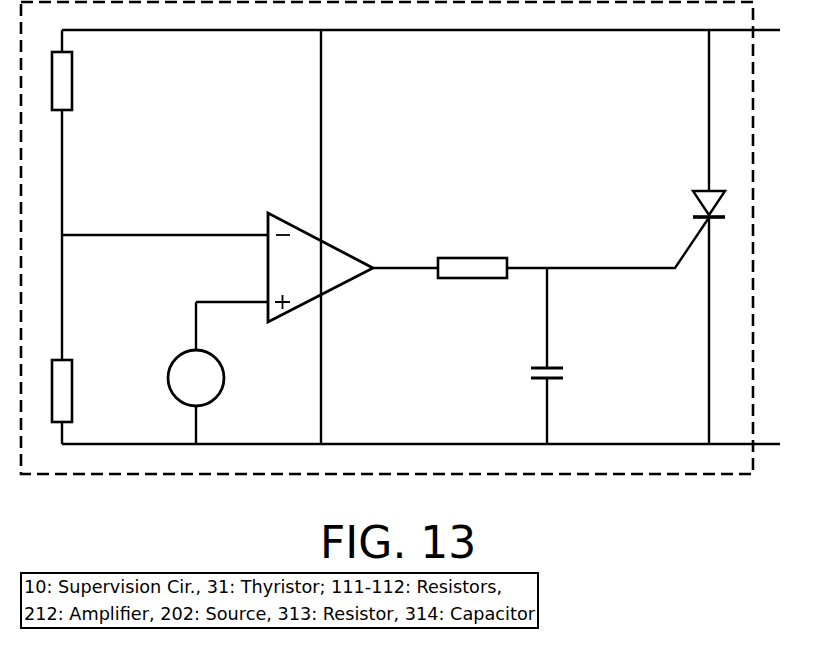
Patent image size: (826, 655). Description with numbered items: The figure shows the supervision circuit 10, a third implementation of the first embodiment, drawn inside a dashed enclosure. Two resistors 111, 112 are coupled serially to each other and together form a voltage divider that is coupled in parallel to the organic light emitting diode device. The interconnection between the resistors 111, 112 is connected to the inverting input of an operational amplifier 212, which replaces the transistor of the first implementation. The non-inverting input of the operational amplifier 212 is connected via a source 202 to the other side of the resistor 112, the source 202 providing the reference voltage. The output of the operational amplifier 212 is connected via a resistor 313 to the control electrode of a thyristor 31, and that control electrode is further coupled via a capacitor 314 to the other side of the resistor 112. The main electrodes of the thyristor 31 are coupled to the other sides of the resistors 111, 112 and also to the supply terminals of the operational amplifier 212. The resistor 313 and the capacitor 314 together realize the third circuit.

The supervision circuit 10 is at (678, 477).
The thyristor 31 is at (696, 207).
The resistor 111 is at (72, 80).
The resistor 112 is at (72, 387).
The operational amplifier 212 is at (291, 218).
The source 202 is at (224, 378).
The resistor 313 is at (464, 258).
The capacitor 314 is at (563, 375).